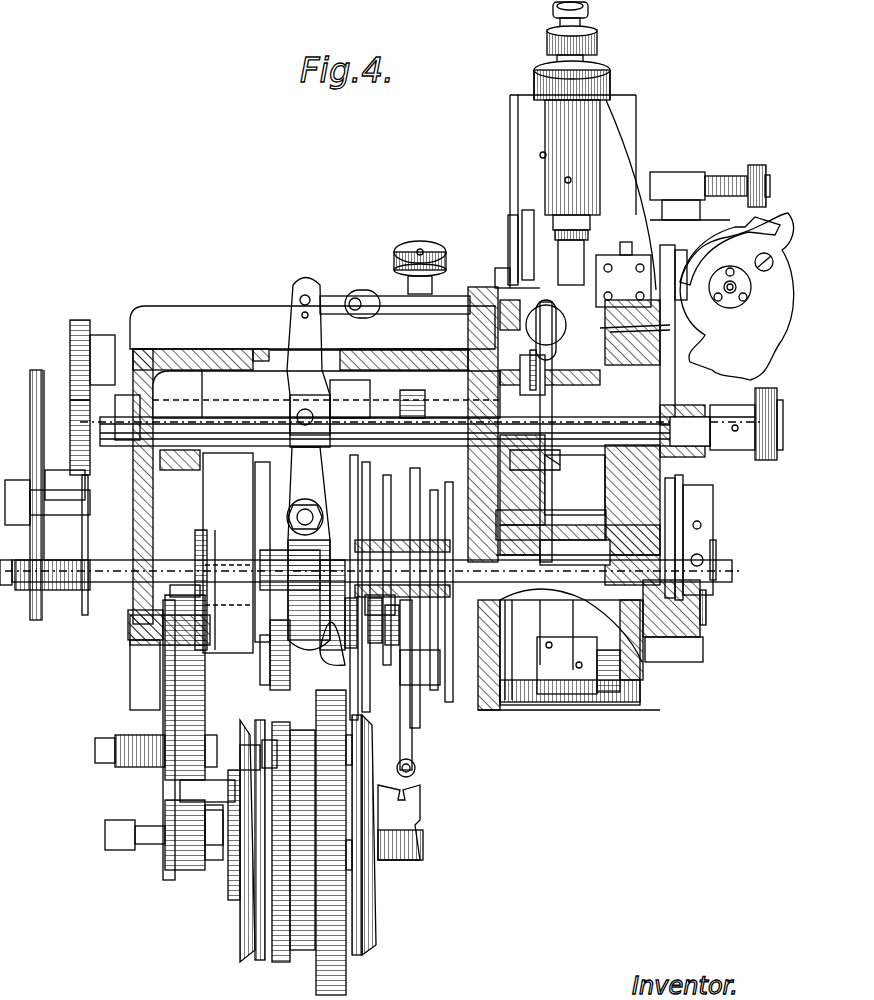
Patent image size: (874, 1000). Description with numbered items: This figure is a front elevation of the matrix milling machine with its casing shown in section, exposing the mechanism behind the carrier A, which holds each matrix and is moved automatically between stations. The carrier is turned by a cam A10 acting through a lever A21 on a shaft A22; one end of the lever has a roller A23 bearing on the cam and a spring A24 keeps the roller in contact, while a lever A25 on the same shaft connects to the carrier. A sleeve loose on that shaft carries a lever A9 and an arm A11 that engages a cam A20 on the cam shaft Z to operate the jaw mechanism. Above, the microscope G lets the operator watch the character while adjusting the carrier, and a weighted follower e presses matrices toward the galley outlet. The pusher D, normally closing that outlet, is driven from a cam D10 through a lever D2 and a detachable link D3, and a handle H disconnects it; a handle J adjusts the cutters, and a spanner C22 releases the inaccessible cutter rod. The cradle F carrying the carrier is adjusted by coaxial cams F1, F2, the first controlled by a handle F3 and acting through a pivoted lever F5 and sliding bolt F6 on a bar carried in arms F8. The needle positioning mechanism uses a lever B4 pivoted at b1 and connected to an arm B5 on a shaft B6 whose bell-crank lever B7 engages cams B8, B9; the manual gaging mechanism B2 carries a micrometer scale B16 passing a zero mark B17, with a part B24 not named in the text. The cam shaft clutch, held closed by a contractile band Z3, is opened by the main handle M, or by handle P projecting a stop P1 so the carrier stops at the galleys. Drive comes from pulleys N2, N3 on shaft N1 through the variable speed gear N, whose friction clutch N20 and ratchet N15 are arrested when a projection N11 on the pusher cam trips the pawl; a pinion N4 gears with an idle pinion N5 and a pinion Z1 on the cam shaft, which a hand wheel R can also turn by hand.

The microscope G is at (583, 146).
The weighted follower e is at (540, 162).
The carrier A is at (530, 245).
The arms F8 is at (620, 248).
The adjusting knob B24 is at (697, 174).
The micrometer scale B16 is at (690, 251).
The zero mark B17 is at (735, 228).
The lever B4 is at (678, 335).
The pivoted lever F5 is at (672, 328).
The cradle F is at (533, 431).
The cam F1 is at (545, 465).
The cam F2 is at (578, 532).
The sliding bolt F6 is at (505, 270).
The pivot b1 is at (680, 430).
The manually controlled gaging mechanism B2 is at (746, 411).
The arm B5 is at (690, 510).
The cam shaft Z is at (716, 560).
The handle P is at (372, 560).
The main control handle M is at (68, 585).
The sliding and rotatable spanner C22 is at (78, 340).
The handle F3 is at (33, 400).
The handle H is at (118, 415).
The hand wheel R is at (82, 420).
The lever D2 is at (300, 345).
The detachable link D3 is at (330, 296).
The pusher D is at (400, 300).
The handle J is at (420, 240).
The cam D10 is at (300, 495).
The pawl or stop P1 is at (270, 590).
The pinion Z1 is at (165, 625).
The contractile band Z3 is at (185, 660).
The idle pinion N5 is at (160, 771).
The pinion N4 is at (160, 866).
The projection N11 is at (270, 660).
The roller A23 is at (385, 520).
The cam A10 is at (412, 518).
The cam A20 is at (475, 500).
The bell-crank lever B7 is at (362, 640).
The cam B8 is at (375, 650).
The cam B9 is at (395, 650).
The arm A11 is at (440, 680).
The lever A21 is at (412, 745).
The spring A24 is at (416, 768).
The lever A9 is at (559, 653).
The shaft B6 is at (605, 560).
The lever A25 is at (570, 640).
The shaft A22 is at (605, 665).
The friction clutch N20 is at (230, 880).
The pulley N3 is at (250, 930).
The ratchet N15 is at (280, 962).
The variable speed gear N is at (342, 842).
The pulley N2 is at (368, 930).
The shaft N1 is at (421, 840).